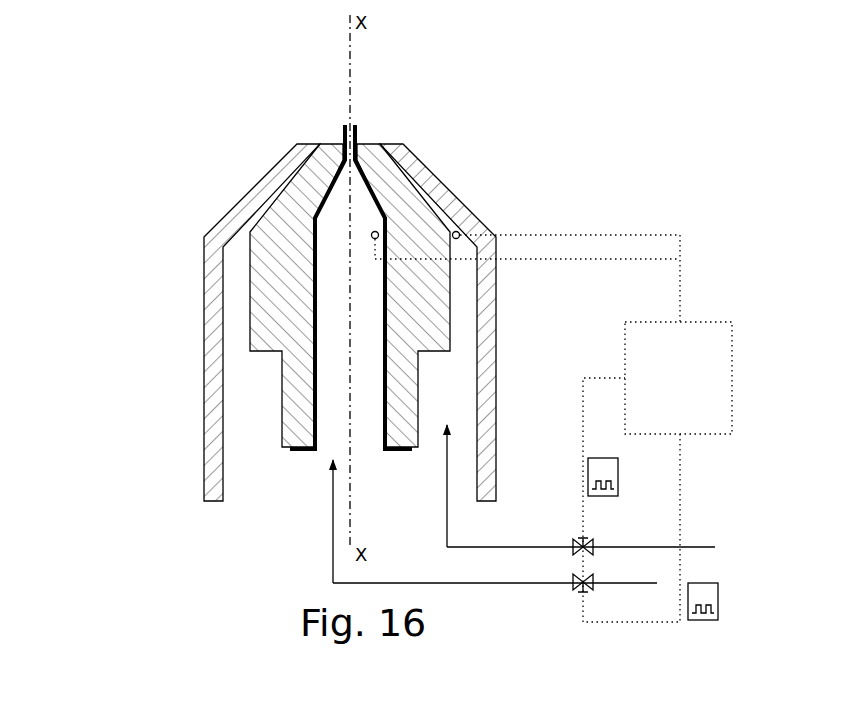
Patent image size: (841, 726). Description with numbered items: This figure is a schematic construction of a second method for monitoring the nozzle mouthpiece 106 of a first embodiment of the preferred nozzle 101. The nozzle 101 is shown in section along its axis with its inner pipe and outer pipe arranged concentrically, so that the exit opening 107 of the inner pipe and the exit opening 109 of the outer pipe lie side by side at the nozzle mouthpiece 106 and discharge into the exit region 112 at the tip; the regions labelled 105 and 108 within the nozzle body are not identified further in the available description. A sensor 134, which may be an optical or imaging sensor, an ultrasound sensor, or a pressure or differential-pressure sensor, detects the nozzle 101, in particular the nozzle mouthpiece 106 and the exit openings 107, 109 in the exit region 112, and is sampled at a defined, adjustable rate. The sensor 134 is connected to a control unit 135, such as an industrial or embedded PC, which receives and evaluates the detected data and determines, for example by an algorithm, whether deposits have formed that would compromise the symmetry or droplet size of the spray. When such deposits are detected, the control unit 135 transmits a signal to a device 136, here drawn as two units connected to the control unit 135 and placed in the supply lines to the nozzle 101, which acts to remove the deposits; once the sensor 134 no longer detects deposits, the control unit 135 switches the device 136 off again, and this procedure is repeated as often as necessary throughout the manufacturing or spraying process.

The nozzle 101 is at (163, 82).
The central channel 105 is at (386, 348).
The nozzle mouthpiece 106 is at (185, 108).
The exit opening 107 is at (338, 123).
The outer channel 108 is at (467, 381).
The exit opening 109 is at (321, 139).
The exit region 112 is at (369, 109).
The sensor 134 is at (378, 231).
The control unit 135 is at (724, 411).
The device 136 is at (595, 537).